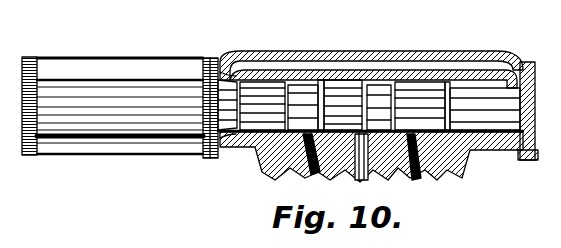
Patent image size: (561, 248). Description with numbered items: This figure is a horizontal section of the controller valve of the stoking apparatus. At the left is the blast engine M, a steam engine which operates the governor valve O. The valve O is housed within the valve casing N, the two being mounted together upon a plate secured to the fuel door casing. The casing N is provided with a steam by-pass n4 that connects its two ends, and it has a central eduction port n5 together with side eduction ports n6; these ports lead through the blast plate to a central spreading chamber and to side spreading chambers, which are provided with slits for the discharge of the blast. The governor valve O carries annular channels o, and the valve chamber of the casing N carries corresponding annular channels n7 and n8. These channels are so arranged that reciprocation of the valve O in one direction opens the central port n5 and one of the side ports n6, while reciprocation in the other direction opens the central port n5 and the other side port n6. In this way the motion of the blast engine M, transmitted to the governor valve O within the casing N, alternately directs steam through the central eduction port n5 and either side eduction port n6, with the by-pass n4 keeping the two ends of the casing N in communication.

The blast engine M is at (106, 72).
The valve casing N is at (482, 150).
The steam by-pass n4 is at (401, 80).
The central eduction port n5 is at (356, 180).
The side eduction ports n6 is at (293, 172).
The annular channel n7 is at (333, 78).
The annular channel n8 is at (383, 83).
The annular channel o is at (322, 78).
The governor valve O is at (439, 80).